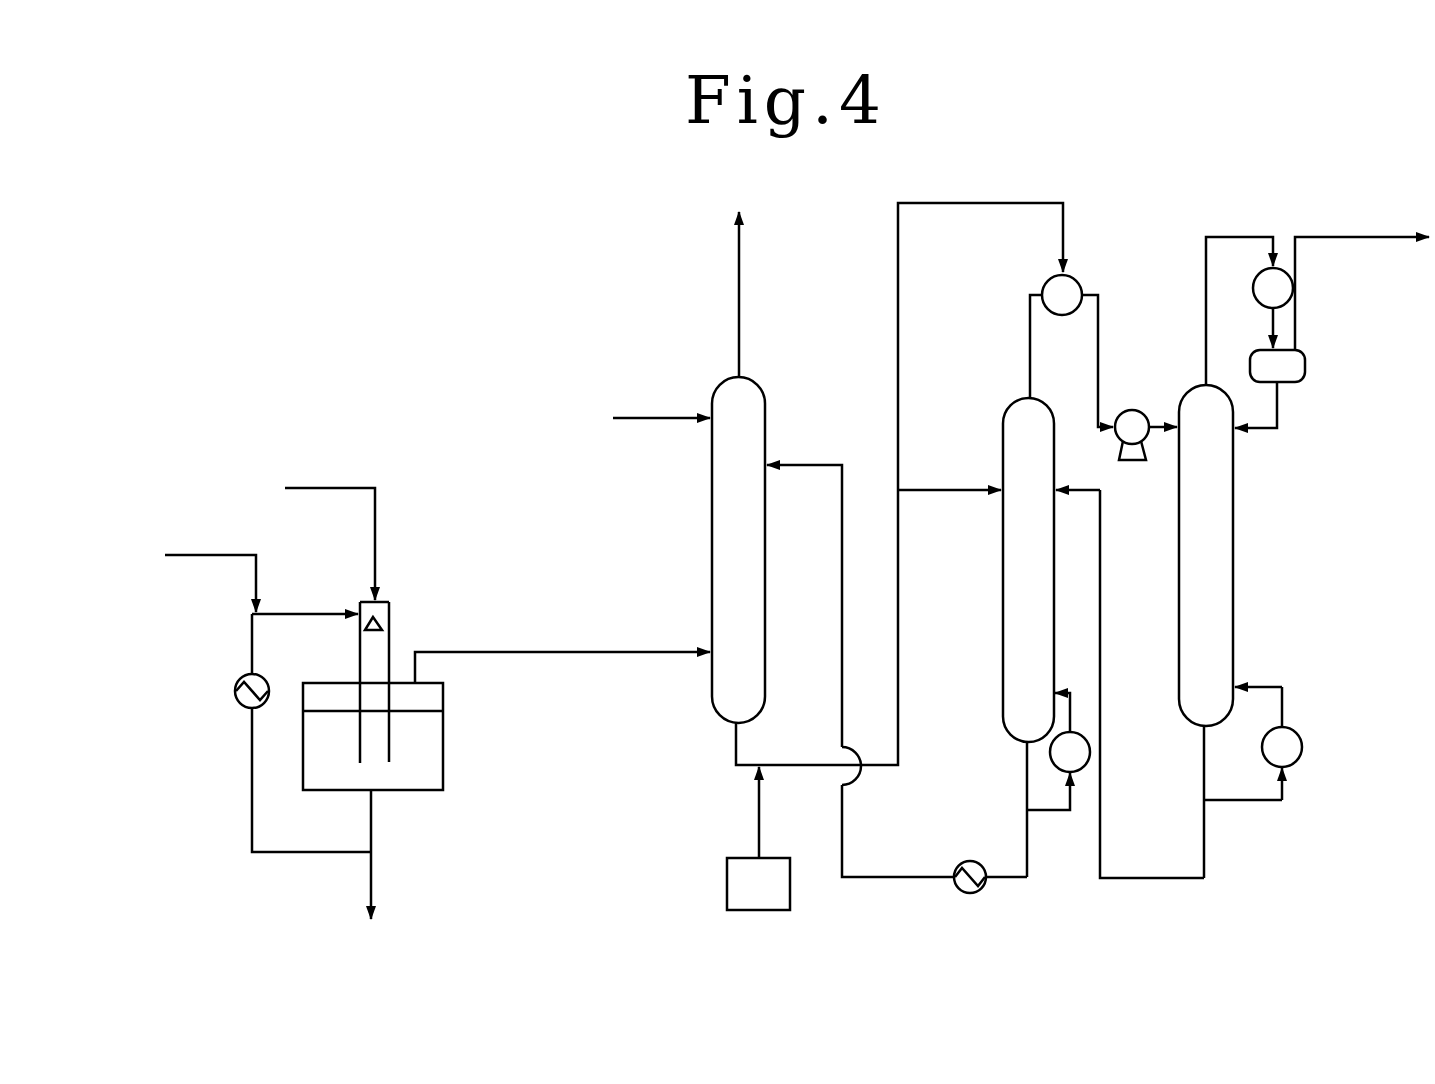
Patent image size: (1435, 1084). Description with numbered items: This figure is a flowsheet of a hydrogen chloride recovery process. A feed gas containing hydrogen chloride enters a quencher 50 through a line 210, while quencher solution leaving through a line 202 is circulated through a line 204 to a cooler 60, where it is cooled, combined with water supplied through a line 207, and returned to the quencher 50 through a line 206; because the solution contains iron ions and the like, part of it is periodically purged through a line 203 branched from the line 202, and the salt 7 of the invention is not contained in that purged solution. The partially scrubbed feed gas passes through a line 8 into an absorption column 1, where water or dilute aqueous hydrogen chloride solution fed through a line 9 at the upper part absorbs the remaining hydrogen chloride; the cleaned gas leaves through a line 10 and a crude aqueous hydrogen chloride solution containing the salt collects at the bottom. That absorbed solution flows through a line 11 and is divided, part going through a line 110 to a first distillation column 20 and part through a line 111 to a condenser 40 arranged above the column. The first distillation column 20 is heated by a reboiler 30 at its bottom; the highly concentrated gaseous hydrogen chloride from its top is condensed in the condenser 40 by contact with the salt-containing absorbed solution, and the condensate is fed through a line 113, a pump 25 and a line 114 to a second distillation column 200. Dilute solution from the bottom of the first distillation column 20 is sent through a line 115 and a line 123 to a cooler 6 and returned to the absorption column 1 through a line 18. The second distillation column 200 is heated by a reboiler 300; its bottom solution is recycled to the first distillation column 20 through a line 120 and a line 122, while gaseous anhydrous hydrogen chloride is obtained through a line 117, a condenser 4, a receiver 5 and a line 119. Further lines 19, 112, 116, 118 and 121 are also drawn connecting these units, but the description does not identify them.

The absorption column 1 is at (738, 550).
The condenser 4 is at (1256, 292).
The receiver 5 is at (1305, 368).
The cooler 6 is at (967, 862).
The salt 7 is at (758, 884).
The line 8 is at (630, 652).
The line 9 is at (645, 418).
The line 10 is at (740, 340).
The line 11 is at (898, 580).
The line 18 is at (788, 465).
The heating medium line 19 is at (761, 812).
The first distillation column 20 is at (1028, 570).
The pump 25 is at (1132, 461).
The reboiler 30 is at (1090, 745).
The condenser 40 is at (1076, 281).
The quencher 50 is at (389, 602).
The cooler 60 is at (237, 678).
The line 110 is at (920, 490).
The line 111 is at (940, 202).
The condensate return line 112 is at (1031, 382).
The line 113 is at (1099, 382).
The line 114 is at (1152, 427).
The line 115 is at (1027, 760).
The reboiler feed line 116 is at (1058, 811).
The line 117 is at (1206, 260).
The reflux line 118 is at (1278, 417).
The line 119 is at (1330, 237).
The line 120 is at (1204, 775).
The reboiler circulation line 121 is at (1250, 800).
The line 122 is at (1165, 878).
The line 123 is at (1028, 868).
The second distillation column 200 is at (1234, 580).
The line 202 is at (372, 823).
The line 203 is at (372, 885).
The line 204 is at (260, 852).
The line 206 is at (333, 613).
The line 207 is at (200, 555).
The line 210 is at (376, 530).
The reboiler 300 is at (1297, 735).